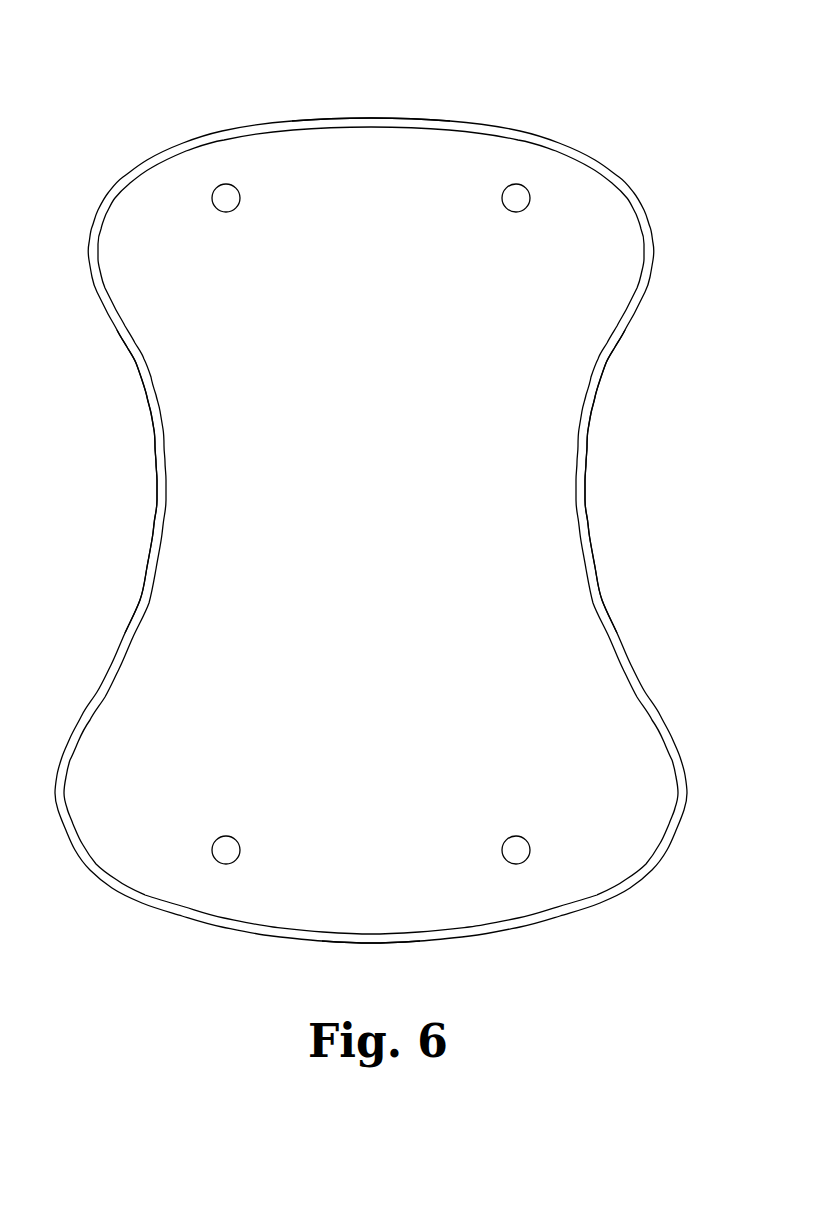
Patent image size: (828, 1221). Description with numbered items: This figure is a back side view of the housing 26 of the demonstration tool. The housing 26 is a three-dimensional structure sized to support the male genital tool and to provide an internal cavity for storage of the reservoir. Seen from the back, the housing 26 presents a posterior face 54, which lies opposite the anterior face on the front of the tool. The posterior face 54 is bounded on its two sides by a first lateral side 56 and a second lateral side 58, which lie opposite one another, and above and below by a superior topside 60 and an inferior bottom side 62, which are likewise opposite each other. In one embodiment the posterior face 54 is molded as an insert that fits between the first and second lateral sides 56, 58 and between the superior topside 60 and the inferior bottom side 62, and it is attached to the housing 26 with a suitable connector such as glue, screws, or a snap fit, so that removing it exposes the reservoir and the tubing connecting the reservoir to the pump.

The housing 26 is at (465, 101).
The posterior face 54 is at (357, 505).
The first lateral side 56 is at (585, 505).
The second lateral side 58 is at (157, 512).
The superior topside 60 is at (381, 118).
The inferior bottom side 62 is at (380, 944).